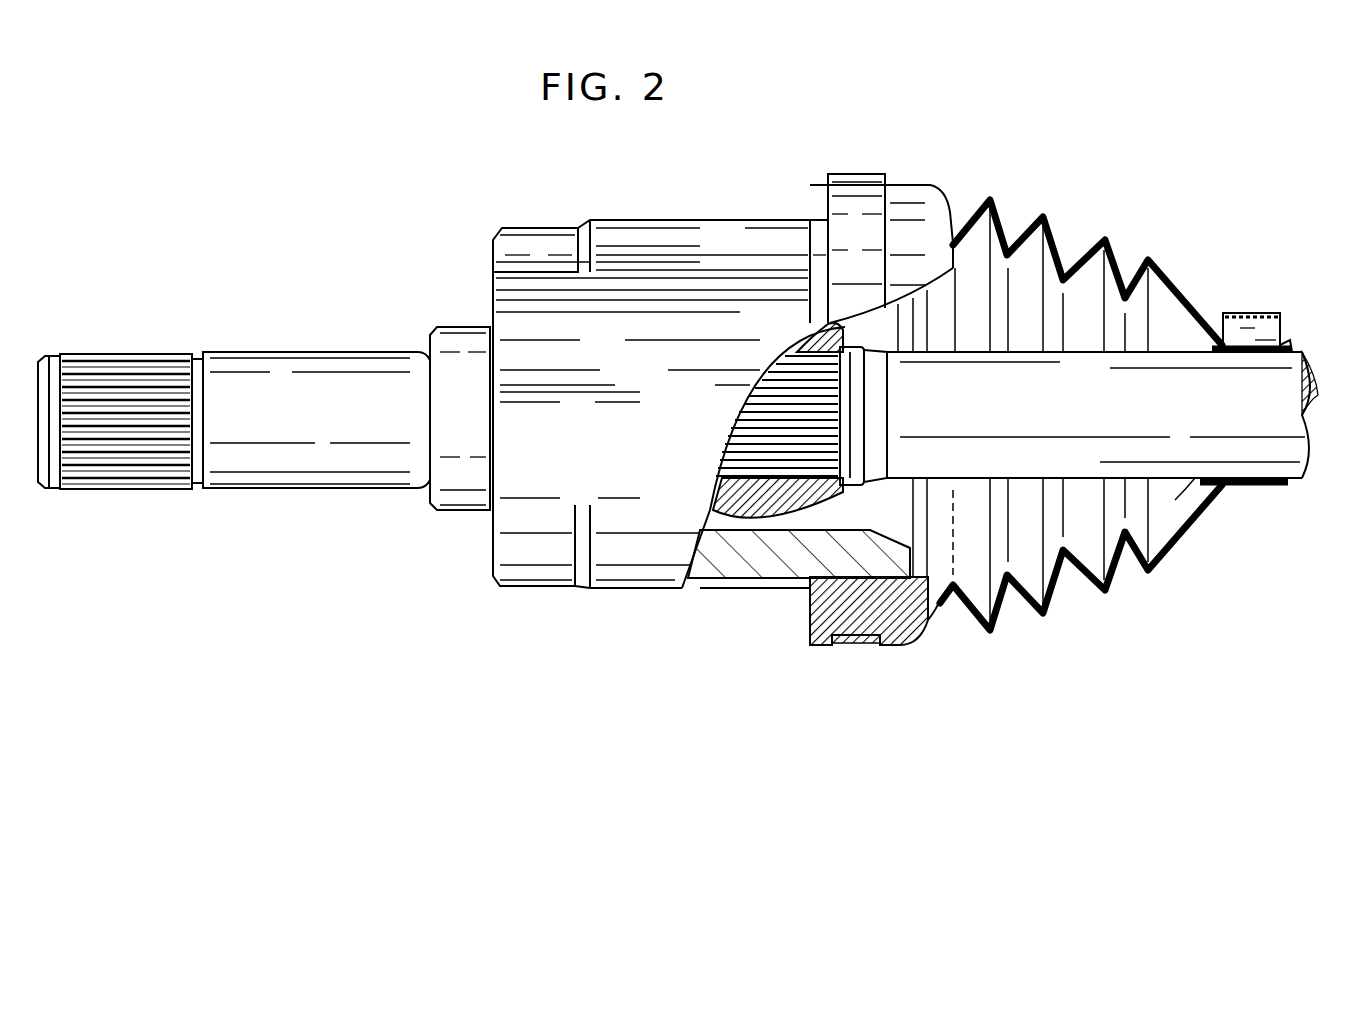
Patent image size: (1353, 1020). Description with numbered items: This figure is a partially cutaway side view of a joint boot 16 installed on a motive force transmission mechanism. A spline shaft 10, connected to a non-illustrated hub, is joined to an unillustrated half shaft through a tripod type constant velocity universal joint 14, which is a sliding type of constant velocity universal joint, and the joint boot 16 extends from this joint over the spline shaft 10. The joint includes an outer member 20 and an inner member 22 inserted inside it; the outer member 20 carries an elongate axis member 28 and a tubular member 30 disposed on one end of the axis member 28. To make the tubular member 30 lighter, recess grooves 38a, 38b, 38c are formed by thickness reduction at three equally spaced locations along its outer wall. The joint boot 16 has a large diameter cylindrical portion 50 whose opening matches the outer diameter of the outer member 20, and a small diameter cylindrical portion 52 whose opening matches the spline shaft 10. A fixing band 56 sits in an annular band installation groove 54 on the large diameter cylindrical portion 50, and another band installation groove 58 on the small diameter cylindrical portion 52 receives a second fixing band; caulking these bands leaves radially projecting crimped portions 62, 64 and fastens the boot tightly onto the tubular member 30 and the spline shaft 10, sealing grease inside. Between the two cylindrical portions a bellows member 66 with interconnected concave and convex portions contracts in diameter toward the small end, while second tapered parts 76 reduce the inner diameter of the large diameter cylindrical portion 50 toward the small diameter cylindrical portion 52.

The spline shaft 10 is at (1215, 465).
The tripod type constant velocity universal joint 14 is at (746, 216).
The joint boot 16 is at (1106, 240).
The outer member 20 is at (380, 636).
The inner member 22 is at (725, 522).
The axis member 28 is at (418, 480).
The tubular member 30 is at (513, 580).
The recess groove 38a is at (631, 281).
The recess groove 38b is at (690, 270).
The recess groove 38c is at (730, 585).
The large diameter cylindrical portion 50 is at (906, 646).
The small diameter cylindrical portion 52 is at (1290, 340).
The band installation groove 54 is at (858, 646).
The fixing band 56 is at (876, 222).
The band installation groove 58 is at (1256, 476).
The crimped portion 62 is at (846, 180).
The crimped portion 64 is at (1245, 314).
The bellows member 66 is at (1041, 214).
The second tapered part 76 is at (810, 584).